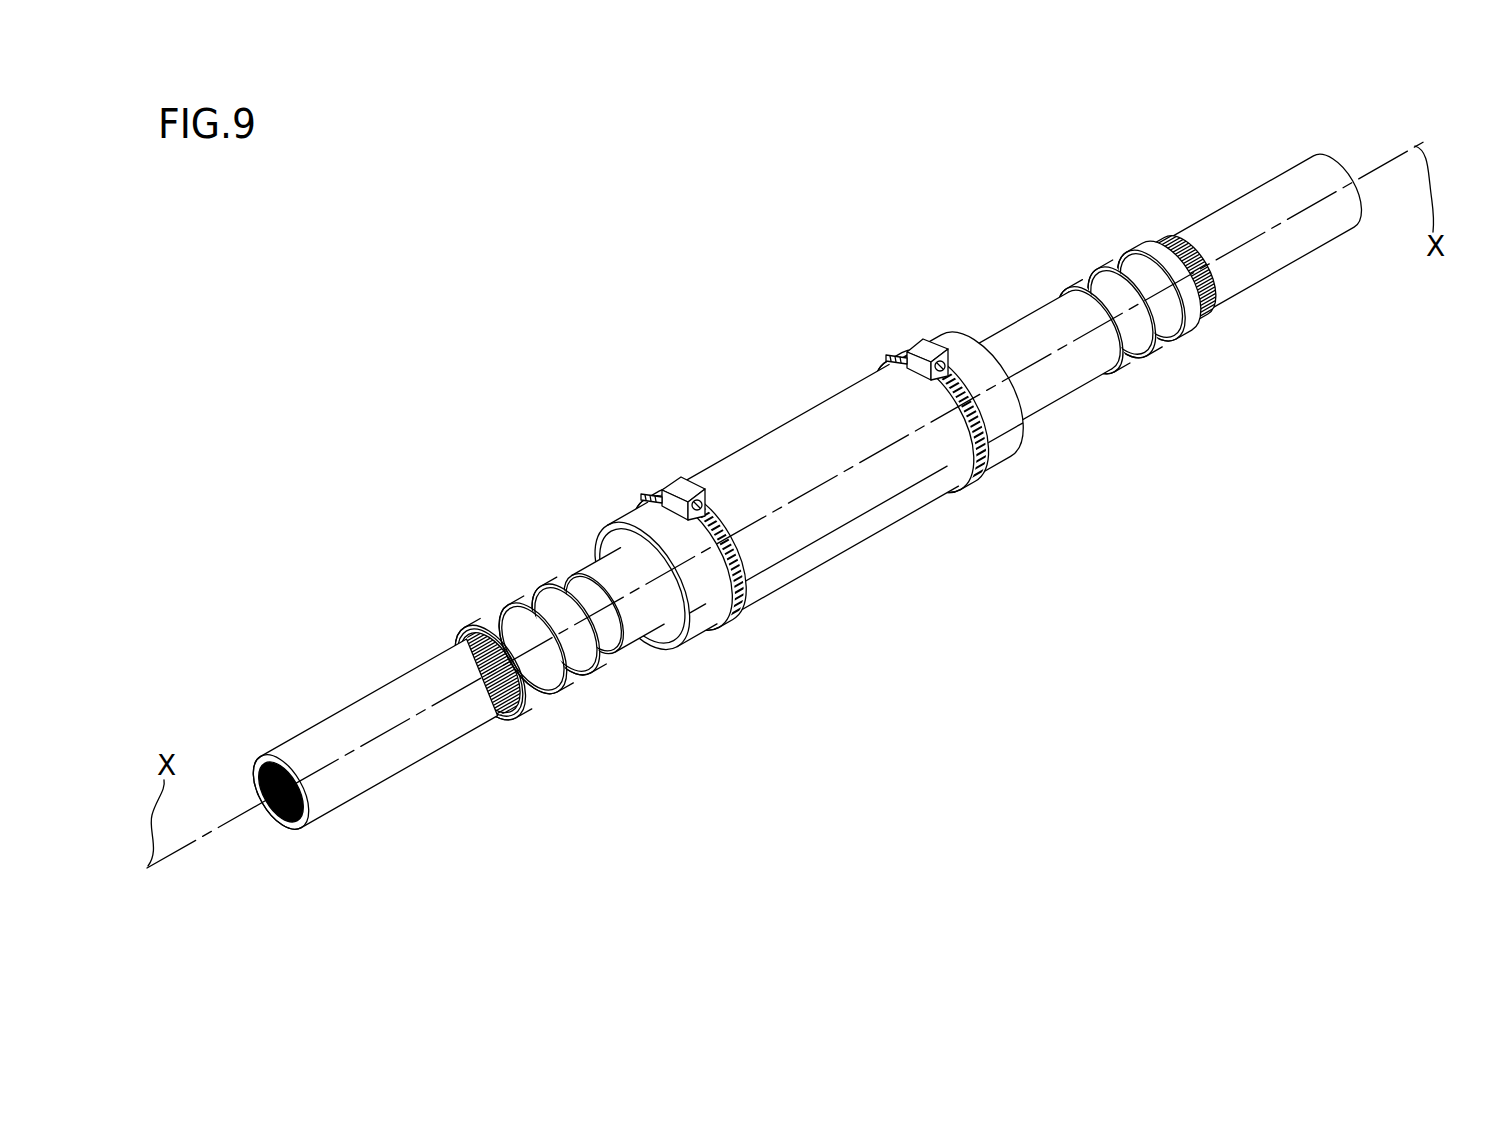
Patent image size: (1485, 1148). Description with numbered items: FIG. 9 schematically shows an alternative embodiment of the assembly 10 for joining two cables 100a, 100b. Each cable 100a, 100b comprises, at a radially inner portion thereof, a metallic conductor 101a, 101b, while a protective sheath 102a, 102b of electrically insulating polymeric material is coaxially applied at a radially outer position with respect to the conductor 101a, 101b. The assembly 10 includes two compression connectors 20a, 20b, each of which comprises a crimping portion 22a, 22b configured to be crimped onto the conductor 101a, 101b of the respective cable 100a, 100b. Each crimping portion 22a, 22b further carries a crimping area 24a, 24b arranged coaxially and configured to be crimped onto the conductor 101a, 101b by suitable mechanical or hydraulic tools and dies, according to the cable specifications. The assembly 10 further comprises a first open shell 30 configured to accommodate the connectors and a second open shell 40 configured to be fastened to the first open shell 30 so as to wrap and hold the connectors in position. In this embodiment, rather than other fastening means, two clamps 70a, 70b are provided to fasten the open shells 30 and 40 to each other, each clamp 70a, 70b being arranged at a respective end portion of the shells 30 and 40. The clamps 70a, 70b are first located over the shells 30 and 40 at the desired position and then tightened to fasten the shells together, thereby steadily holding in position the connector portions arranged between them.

The assembly 10 is at (807, 491).
The compression connector 20a is at (1023, 368).
The compression connector 20b is at (608, 606).
The crimping portion 22a is at (1129, 308).
The crimping portion 22b is at (549, 639).
The crimping area 24a is at (1129, 308).
The crimping area 24b is at (549, 639).
The first open shell 30 is at (957, 406).
The second open shell 40 is at (793, 500).
The clamp 70a is at (932, 420).
The clamp 70b is at (693, 557).
The cable 100a is at (1249, 240).
The cable 100b is at (388, 731).
The metallic conductor 101a is at (1178, 280).
The metallic conductor 101b is at (490, 673).
The protective sheath 102a is at (1260, 233).
The protective sheath 102b is at (374, 738).